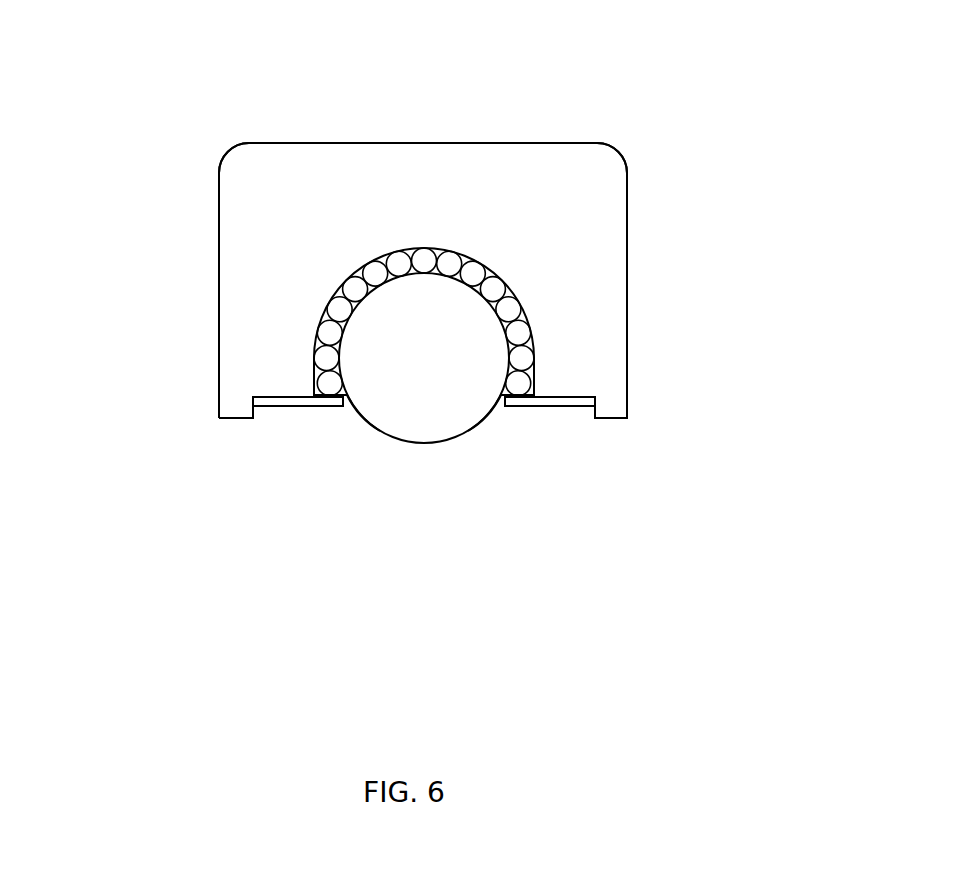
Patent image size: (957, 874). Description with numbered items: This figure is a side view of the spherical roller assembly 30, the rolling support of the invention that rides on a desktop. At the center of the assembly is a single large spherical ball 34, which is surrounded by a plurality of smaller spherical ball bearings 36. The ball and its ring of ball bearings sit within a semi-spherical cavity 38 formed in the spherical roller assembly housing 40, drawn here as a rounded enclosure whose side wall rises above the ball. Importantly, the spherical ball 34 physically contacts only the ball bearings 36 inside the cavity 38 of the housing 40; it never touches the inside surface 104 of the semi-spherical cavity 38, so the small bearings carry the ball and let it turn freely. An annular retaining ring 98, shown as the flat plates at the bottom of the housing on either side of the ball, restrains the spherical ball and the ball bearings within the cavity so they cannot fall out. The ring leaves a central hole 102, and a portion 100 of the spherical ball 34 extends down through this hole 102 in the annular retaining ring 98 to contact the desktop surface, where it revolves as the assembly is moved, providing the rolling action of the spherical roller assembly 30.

The spherical roller assembly 30 is at (714, 71).
The spherical ball 34 is at (403, 415).
The spherical ball bearings 36 is at (315, 352).
The semi-spherical cavity 38 is at (529, 286).
The spherical roller assembly housing 40 is at (595, 372).
The annular retaining ring 98 is at (277, 415).
The portion of the spherical ball 100 is at (467, 414).
The hole 102 is at (359, 417).
The inside surface 104 is at (532, 329).